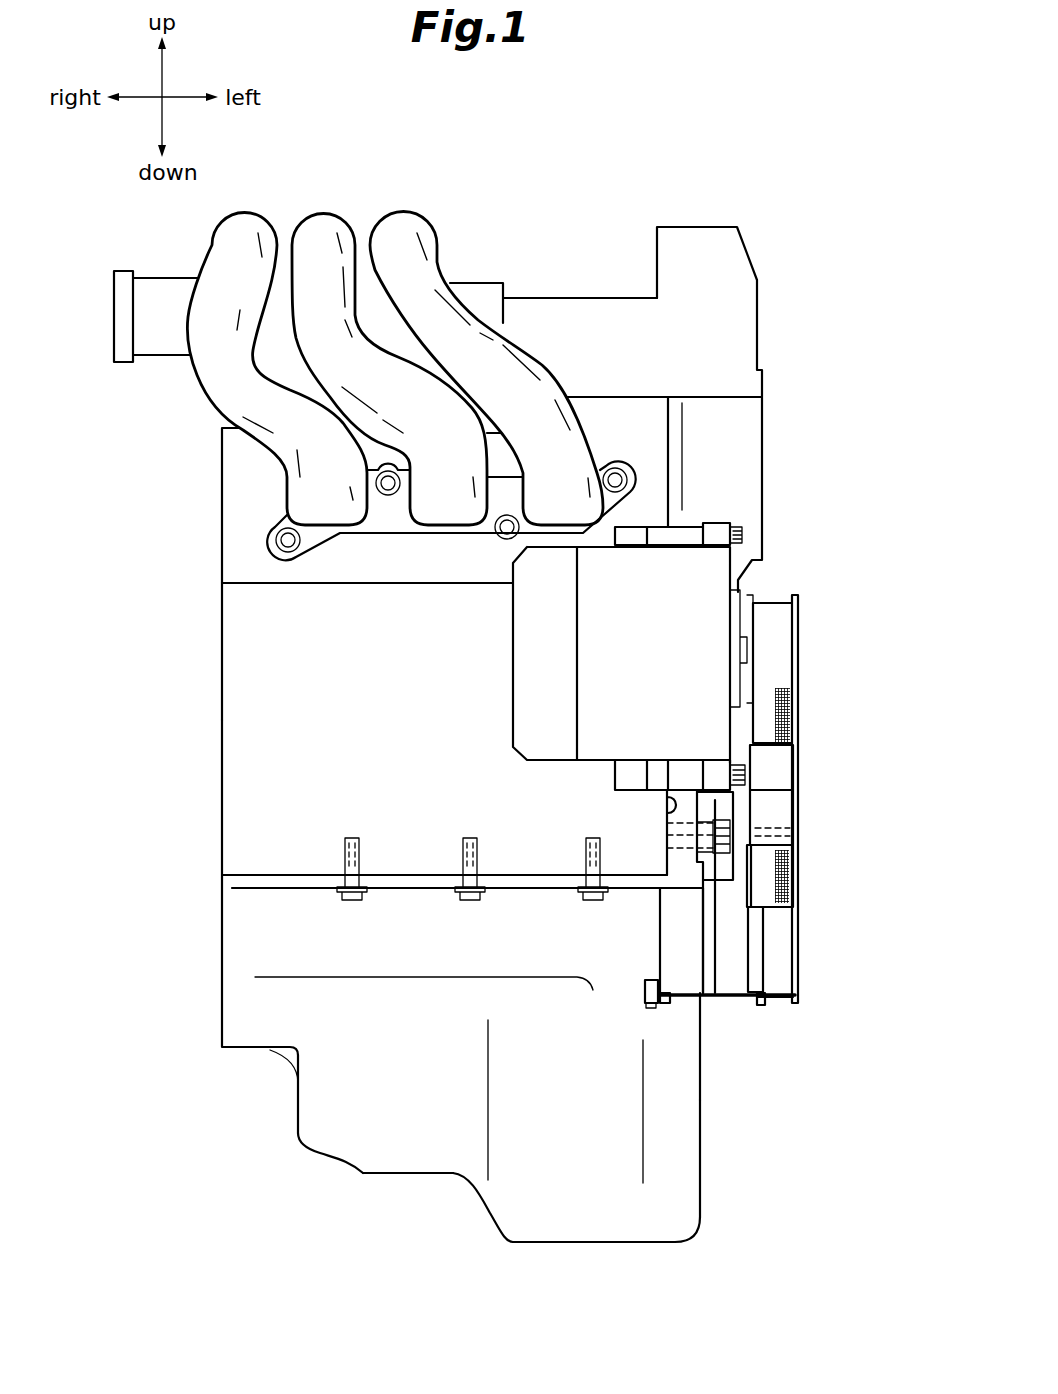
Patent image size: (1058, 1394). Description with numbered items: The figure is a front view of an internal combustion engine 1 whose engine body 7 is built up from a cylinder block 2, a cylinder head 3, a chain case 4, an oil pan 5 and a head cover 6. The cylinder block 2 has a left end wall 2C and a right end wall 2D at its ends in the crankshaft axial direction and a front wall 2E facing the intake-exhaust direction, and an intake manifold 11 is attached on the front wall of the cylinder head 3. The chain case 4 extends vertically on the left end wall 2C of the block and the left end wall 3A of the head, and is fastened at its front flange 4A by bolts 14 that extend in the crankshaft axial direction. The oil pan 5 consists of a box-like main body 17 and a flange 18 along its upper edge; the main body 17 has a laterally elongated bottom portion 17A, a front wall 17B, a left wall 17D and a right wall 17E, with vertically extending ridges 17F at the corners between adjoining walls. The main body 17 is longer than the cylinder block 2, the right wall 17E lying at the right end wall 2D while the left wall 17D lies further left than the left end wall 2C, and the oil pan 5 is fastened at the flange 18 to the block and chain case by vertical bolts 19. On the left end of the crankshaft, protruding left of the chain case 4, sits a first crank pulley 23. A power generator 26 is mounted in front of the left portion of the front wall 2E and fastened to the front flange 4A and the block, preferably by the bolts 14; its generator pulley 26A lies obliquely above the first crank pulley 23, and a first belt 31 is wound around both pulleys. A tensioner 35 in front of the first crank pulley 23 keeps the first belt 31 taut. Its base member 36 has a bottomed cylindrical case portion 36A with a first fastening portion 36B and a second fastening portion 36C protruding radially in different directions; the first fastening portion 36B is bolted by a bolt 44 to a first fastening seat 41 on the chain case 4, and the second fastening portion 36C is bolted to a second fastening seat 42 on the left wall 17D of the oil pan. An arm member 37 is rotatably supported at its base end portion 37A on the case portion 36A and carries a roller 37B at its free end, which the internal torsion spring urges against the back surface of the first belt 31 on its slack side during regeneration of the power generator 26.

The internal combustion engine 1 is at (537, 100).
The cylinder block 2 is at (212, 696).
The left end wall 2C is at (668, 810).
The right end wall 2D is at (222, 656).
The front wall 2E is at (258, 757).
The cylinder head 3 is at (230, 490).
The left end wall 3A is at (670, 423).
The chain case 4 is at (770, 493).
The front flange 4A is at (677, 460).
The oil pan 5 is at (212, 1030).
The head cover 6 is at (597, 305).
The engine body 7 is at (523, 268).
The intake manifold 11 is at (327, 215).
The bolt 14 is at (740, 535).
The main body 17 is at (245, 955).
The bottom portion 17A is at (577, 1242).
The front wall 17B is at (413, 1160).
The left wall 17D is at (703, 1168).
The right wall 17E is at (298, 1130).
The ridge 17F is at (703, 1097).
The flange 18 is at (247, 880).
The bolt 19 is at (470, 905).
The first crank pulley 23 is at (797, 1000).
The power generator 26 is at (577, 675).
The generator pulley 26A is at (800, 647).
The first belt 31 is at (772, 613).
The tensioner 35 is at (768, 1010).
The base member 36 is at (710, 975).
The case portion 36A is at (648, 975).
The first fastening portion 36B is at (707, 858).
The second fastening portion 36C is at (665, 1005).
The arm member 37 is at (740, 924).
The base end portion 37A is at (740, 963).
The roller 37B is at (790, 778).
The first fastening seat 41 is at (668, 830).
The second fastening seat 42 is at (650, 1003).
The bolt 44 is at (713, 832).